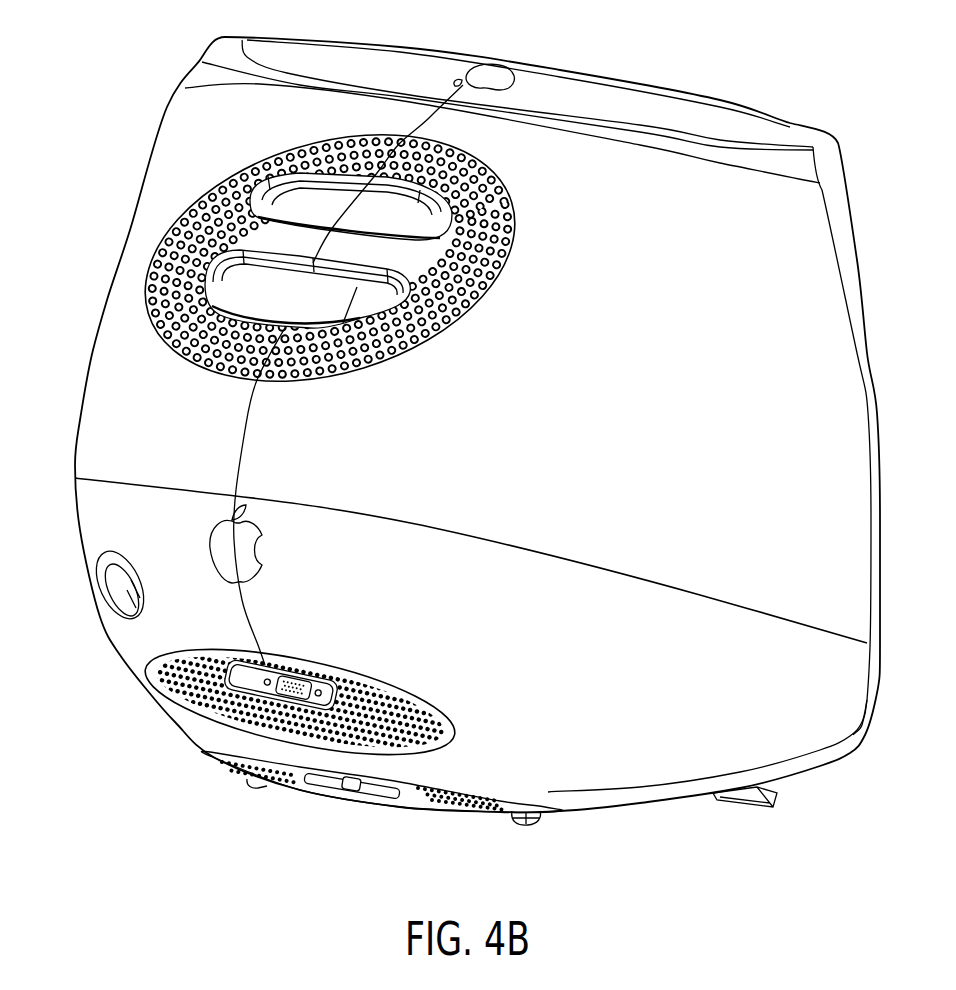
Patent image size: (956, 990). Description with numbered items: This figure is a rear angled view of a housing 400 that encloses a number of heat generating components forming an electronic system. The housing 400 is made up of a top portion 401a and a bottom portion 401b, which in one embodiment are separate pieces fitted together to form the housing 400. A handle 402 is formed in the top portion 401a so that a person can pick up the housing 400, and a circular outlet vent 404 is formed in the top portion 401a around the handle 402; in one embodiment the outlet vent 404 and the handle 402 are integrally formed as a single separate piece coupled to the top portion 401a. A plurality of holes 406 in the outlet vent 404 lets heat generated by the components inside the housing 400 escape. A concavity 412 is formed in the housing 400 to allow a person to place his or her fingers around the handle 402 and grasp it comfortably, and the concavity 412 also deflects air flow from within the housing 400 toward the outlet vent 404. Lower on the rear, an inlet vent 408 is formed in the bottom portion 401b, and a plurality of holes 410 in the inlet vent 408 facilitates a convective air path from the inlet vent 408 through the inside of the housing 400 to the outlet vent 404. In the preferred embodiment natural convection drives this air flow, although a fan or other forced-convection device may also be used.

The housing 400 is at (165, 107).
The top portion 401a is at (807, 262).
The bottom portion 401b is at (767, 707).
The handle 402 is at (253, 232).
The circular outlet vent 404 is at (143, 310).
The plurality of holes 406 is at (153, 257).
The inlet vent 408 is at (148, 678).
The plurality of holes 410 is at (193, 707).
The concavity 412 is at (273, 298).